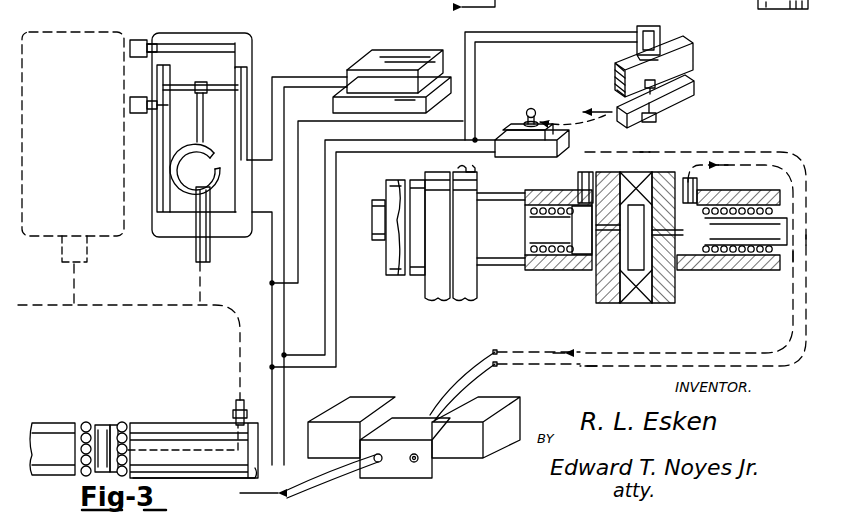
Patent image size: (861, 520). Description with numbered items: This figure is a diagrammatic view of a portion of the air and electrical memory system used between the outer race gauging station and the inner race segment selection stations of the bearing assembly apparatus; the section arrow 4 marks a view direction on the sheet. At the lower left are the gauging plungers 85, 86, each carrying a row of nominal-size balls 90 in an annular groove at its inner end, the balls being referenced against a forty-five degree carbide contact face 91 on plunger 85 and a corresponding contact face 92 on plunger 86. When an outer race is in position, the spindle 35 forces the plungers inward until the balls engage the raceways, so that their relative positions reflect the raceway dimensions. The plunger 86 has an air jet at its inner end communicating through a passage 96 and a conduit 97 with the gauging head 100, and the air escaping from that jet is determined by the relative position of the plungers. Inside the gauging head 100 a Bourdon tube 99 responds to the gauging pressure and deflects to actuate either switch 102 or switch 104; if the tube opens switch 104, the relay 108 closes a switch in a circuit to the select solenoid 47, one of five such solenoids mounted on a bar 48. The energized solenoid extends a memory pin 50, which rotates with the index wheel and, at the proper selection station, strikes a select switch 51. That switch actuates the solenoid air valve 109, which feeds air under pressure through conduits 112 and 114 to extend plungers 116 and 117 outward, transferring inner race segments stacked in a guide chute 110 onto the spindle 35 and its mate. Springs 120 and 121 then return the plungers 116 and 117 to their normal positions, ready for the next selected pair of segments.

The section line arrow 4 is at (488, 8).
The spindle 35 is at (437, 236).
The select solenoid 47 is at (662, 28).
The bar 48 is at (690, 55).
The memory pin 50 is at (658, 118).
The select switch 51 is at (507, 128).
The gauging plunger 85 is at (48, 433).
The gauging plunger 86 is at (188, 431).
The balls 90 is at (88, 421).
The contact face 91 is at (82, 421).
The contact face 92 is at (126, 421).
The passage 96 is at (178, 479).
The conduit 97 is at (237, 410).
The Bourdon tube 99 is at (195, 203).
The gauging head 100 is at (165, 33).
The switch 102 is at (166, 60).
The switch 104 is at (243, 60).
The relay 108 is at (400, 62).
The solenoid air valve 109 is at (397, 478).
The guide chute 110 is at (480, 166).
The conduit 112 is at (728, 151).
The conduit 114 is at (527, 350).
The plunger 116 is at (536, 230).
The plunger 117 is at (705, 270).
The spring 120 is at (550, 272).
The spring 121 is at (765, 272).